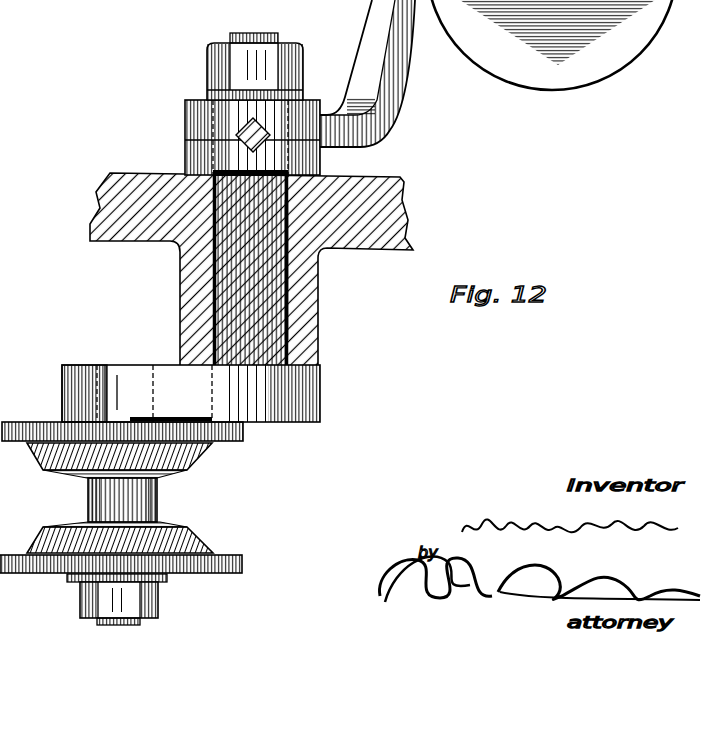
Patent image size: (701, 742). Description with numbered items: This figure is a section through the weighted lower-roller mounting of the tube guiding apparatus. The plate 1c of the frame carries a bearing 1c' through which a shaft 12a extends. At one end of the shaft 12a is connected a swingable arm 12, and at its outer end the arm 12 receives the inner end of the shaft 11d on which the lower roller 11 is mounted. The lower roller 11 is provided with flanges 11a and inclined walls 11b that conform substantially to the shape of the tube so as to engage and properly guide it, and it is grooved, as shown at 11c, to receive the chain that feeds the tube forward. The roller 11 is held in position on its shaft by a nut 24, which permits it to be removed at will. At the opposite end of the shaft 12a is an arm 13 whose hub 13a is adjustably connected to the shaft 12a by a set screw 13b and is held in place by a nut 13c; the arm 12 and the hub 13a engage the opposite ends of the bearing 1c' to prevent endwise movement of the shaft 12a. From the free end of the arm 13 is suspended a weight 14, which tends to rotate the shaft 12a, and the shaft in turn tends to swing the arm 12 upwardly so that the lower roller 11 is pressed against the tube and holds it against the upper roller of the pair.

The plate 1c is at (229, 269).
The bearing 1c' is at (320, 270).
The lower roller 11 is at (120, 498).
The flanges 11a is at (13, 421).
The inclined walls 11b is at (210, 457).
The groove 11c is at (167, 503).
The shaft 11d is at (60, 374).
The swingable arm 12 is at (161, 378).
The shaft 12a is at (228, 294).
The arm 13 is at (403, 70).
The hub 13a is at (186, 129).
The set screw 13b is at (183, 146).
The nut 13c is at (303, 51).
The weight 14 is at (608, 68).
The nut 24 is at (158, 608).